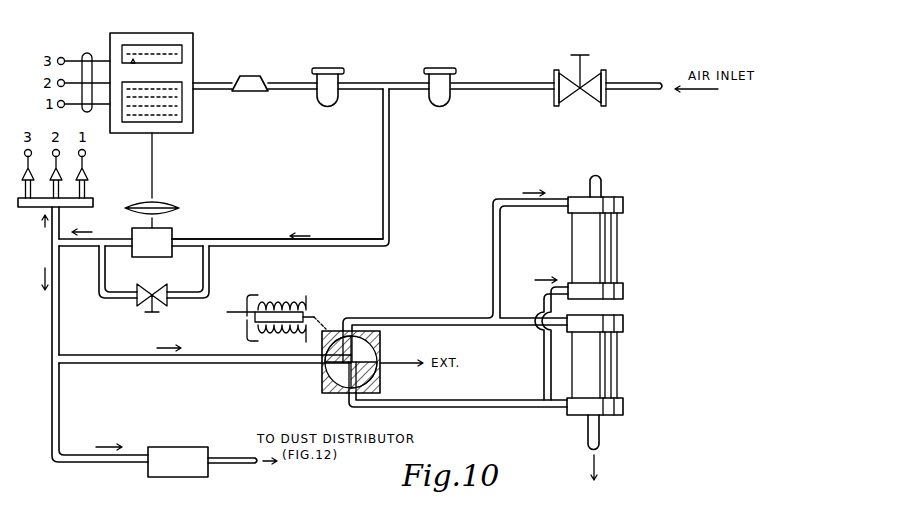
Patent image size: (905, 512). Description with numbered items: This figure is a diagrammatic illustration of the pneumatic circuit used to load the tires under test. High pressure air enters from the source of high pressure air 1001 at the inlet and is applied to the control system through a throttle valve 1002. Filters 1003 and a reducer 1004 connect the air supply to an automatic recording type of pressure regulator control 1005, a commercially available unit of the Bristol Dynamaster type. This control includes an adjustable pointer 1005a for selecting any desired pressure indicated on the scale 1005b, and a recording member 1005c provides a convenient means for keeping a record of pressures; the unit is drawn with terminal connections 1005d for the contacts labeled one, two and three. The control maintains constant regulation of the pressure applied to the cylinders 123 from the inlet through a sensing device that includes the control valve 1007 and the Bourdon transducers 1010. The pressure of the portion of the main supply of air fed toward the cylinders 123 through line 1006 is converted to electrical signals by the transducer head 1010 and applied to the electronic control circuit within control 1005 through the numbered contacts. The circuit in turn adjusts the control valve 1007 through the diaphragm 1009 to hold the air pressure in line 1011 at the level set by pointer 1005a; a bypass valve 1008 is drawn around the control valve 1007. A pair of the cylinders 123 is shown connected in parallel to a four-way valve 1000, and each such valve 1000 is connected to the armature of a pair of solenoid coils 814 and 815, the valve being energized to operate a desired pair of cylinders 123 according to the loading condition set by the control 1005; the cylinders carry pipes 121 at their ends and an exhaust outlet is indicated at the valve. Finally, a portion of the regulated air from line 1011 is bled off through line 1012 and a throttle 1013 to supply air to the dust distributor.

The four-way valve 1000 is at (327, 331).
The source of high pressure air 1001 is at (637, 83).
The throttle valve 1002 is at (580, 56).
The filters 1003 is at (342, 70).
The reducer 1004 is at (262, 76).
The pressure regulator control 1005 is at (195, 52).
The pointer 1005a is at (134, 60).
The scale 1005b is at (165, 58).
The recording member 1005c is at (172, 90).
The terminal block 1005d is at (87, 53).
The line 1006 is at (392, 160).
The control valve 1007 is at (175, 232).
The bypass valve 1008 is at (138, 300).
The diaphragm 1009 is at (165, 200).
The Bourdon transducers 1010 is at (88, 198).
The line 1011 is at (52, 340).
The line 1012 is at (75, 456).
The throttle 1013 is at (172, 447).
The solenoid coil 814 is at (268, 295).
The solenoid coil 815 is at (278, 335).
The cylinder pipe 121 is at (604, 183).
The cylinders 123 is at (616, 244).